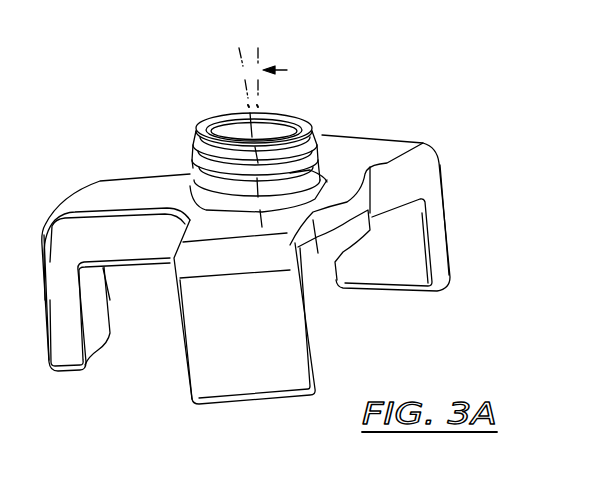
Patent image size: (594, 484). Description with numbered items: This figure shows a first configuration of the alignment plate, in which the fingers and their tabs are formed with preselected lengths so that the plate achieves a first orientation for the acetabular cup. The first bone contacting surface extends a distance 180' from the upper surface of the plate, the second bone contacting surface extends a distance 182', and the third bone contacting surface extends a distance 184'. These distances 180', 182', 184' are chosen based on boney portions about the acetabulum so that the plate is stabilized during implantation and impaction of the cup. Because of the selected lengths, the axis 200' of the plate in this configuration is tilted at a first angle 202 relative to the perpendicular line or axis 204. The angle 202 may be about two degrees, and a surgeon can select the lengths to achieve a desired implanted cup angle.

The distance 180' is at (60, 314).
The distance 182' is at (207, 336).
The distance 184' is at (500, 215).
The axis 200' is at (198, 68).
The first angle 202 is at (243, 70).
The perpendicular line 204 is at (263, 58).